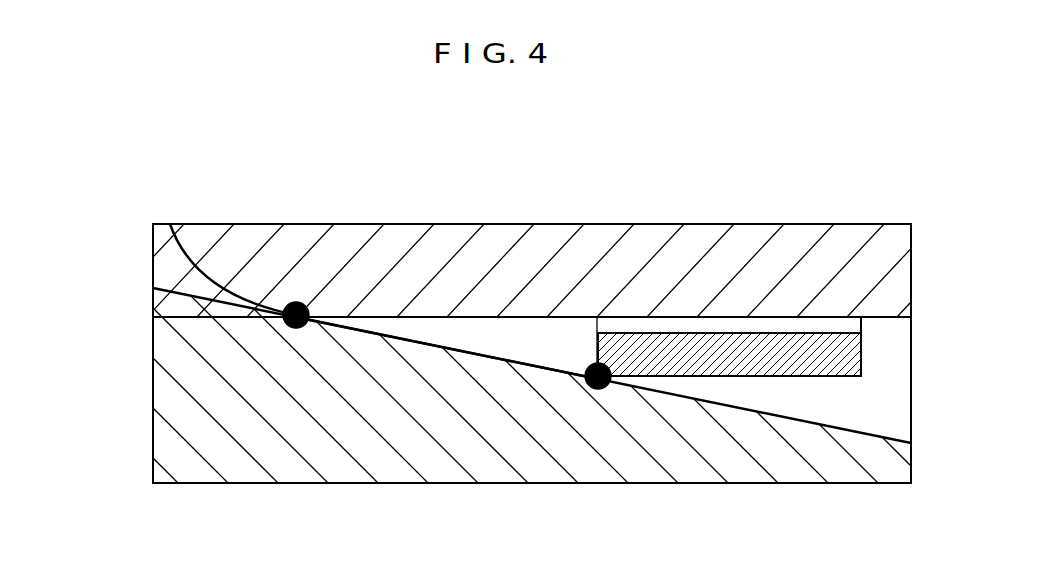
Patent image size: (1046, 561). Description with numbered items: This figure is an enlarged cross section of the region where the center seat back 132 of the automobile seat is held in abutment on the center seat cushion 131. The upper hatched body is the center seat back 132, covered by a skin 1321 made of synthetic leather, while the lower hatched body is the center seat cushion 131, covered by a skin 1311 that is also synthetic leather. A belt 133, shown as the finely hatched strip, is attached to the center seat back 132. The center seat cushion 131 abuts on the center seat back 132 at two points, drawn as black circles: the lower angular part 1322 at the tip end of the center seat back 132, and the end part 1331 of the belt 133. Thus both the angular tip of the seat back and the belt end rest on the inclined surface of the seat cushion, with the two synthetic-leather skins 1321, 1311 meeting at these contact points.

The center seat cushion 131 is at (467, 397).
The skin of the center seat cushion 1311 is at (416, 340).
The center seat back 132 is at (695, 242).
The skin of the center seat back 1321 is at (205, 276).
The lower angular part 1322 is at (296, 302).
The end part of the belt 1331 is at (598, 363).
The belt 133 is at (777, 348).